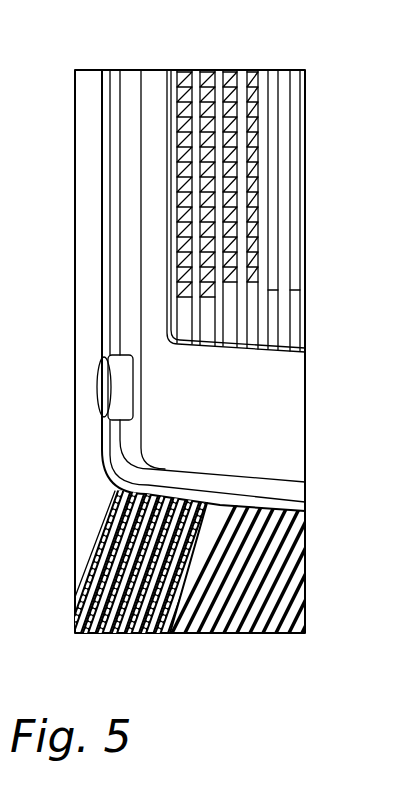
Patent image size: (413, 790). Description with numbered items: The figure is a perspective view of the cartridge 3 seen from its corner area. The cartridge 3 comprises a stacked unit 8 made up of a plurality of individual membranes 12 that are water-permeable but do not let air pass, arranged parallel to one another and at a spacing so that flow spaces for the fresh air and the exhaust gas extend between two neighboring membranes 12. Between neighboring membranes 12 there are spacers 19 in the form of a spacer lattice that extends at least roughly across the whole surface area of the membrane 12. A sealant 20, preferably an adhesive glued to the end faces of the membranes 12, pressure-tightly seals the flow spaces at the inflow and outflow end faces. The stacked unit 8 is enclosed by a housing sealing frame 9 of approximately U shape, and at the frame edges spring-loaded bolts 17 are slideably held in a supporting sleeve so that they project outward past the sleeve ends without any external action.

The cartridge 3 is at (37, 79).
The stacked unit 8 is at (227, 62).
The housing sealing frame 9 is at (288, 414).
The membrane 12 is at (252, 636).
The bolt 17 is at (99, 388).
The spacer 19 is at (130, 636).
The sealant 20 is at (198, 73).